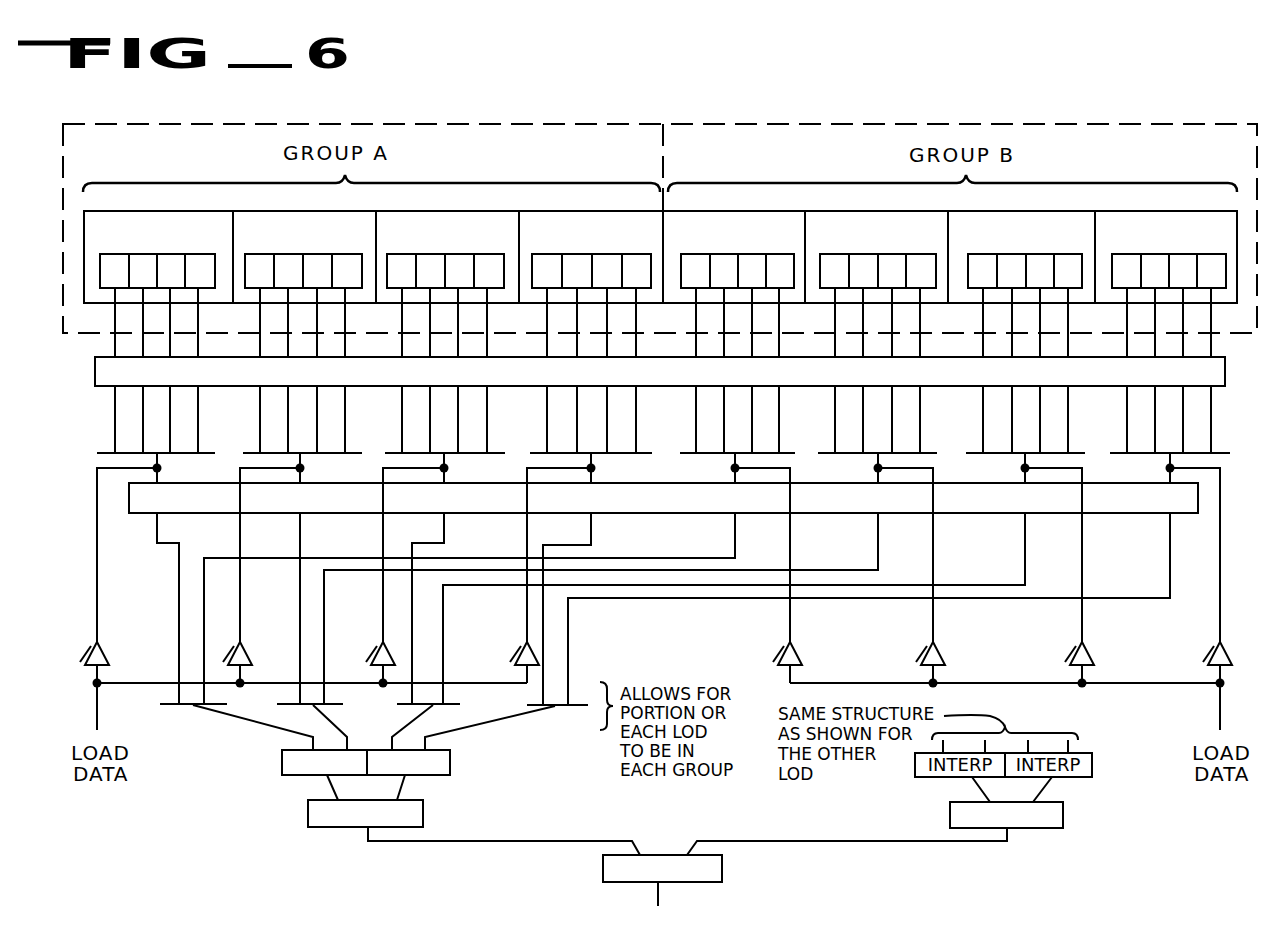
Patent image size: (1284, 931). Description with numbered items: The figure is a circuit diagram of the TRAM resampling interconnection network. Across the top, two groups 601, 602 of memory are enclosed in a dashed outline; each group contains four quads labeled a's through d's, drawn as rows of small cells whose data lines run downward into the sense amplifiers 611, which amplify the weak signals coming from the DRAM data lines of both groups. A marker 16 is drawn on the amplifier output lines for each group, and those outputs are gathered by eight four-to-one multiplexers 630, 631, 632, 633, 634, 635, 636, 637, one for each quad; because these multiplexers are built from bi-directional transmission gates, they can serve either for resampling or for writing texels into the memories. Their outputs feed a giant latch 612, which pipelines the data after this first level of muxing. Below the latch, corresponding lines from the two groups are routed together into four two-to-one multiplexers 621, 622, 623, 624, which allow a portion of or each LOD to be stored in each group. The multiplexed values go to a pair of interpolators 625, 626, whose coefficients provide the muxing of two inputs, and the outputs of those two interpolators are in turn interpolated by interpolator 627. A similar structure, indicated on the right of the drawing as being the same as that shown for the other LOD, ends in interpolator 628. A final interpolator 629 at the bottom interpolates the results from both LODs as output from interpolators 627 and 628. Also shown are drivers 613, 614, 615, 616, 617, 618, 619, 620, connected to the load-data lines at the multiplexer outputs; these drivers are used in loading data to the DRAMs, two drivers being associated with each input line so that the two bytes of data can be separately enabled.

The bus width indicator (16 lines) 16 is at (707, 429).
The group of memory 601 is at (445, 117).
The group of memory 602 is at (990, 120).
The sense amplifiers 611 is at (660, 371).
The giant latch 612 is at (663, 498).
The driver 613 is at (109, 656).
The driver 614 is at (252, 656).
The driver 615 is at (371, 656).
The driver 616 is at (515, 656).
The driver 617 is at (800, 657).
The driver 618 is at (943, 657).
The driver 619 is at (1092, 657).
The driver 620 is at (1228, 657).
The 2:1 multiplexer 621 is at (191, 708).
The 2:1 multiplexer 622 is at (298, 704).
The 2:1 multiplexer 623 is at (452, 712).
The 2:1 multiplexer 624 is at (572, 708).
The interpolator 625 is at (280, 762).
The interpolator 626 is at (452, 770).
The interpolator 627 is at (306, 815).
The interpolator 628 is at (1067, 817).
The final interpolator 629 is at (724, 878).
The 4:1 multiplexer 630 is at (205, 449).
The 4:1 multiplexer 631 is at (352, 449).
The 4:1 multiplexer 632 is at (496, 450).
The 4:1 multiplexer 633 is at (641, 450).
The 4:1 multiplexer 634 is at (788, 450).
The 4:1 multiplexer 635 is at (931, 450).
The 4:1 multiplexer 636 is at (1076, 450).
The 4:1 multiplexer 637 is at (1221, 450).